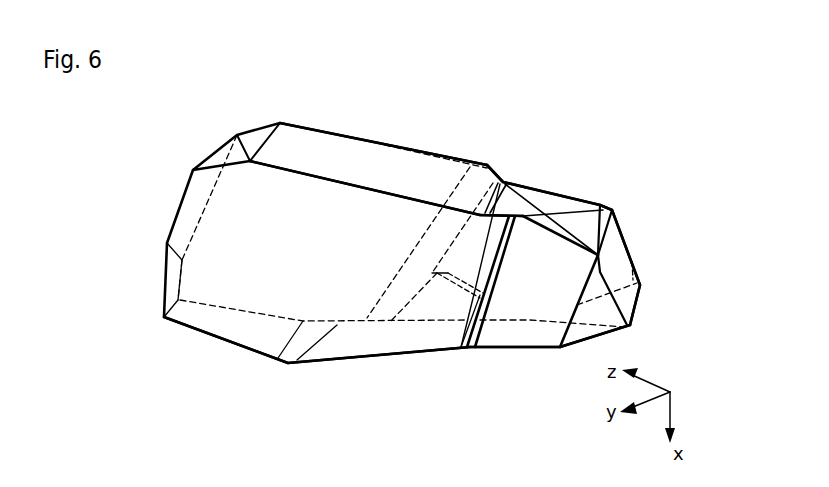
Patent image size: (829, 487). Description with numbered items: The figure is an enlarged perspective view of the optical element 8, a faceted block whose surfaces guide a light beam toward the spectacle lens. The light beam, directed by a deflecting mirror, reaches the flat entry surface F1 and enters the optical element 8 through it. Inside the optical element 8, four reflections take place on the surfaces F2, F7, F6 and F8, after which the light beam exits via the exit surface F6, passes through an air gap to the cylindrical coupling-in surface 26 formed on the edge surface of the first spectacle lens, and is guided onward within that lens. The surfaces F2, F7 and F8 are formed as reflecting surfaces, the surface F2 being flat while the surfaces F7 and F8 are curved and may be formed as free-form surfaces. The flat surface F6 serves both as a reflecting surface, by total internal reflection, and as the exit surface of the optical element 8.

The cylindrical coupling-in surface 26 is at (402, 286).
The optical element 8 is at (472, 349).
The entry surface F1 is at (617, 252).
The reflecting surface F2 is at (497, 349).
The exit surface F6 is at (325, 305).
The reflecting surface F7 is at (533, 197).
The reflecting surface F8 is at (405, 150).